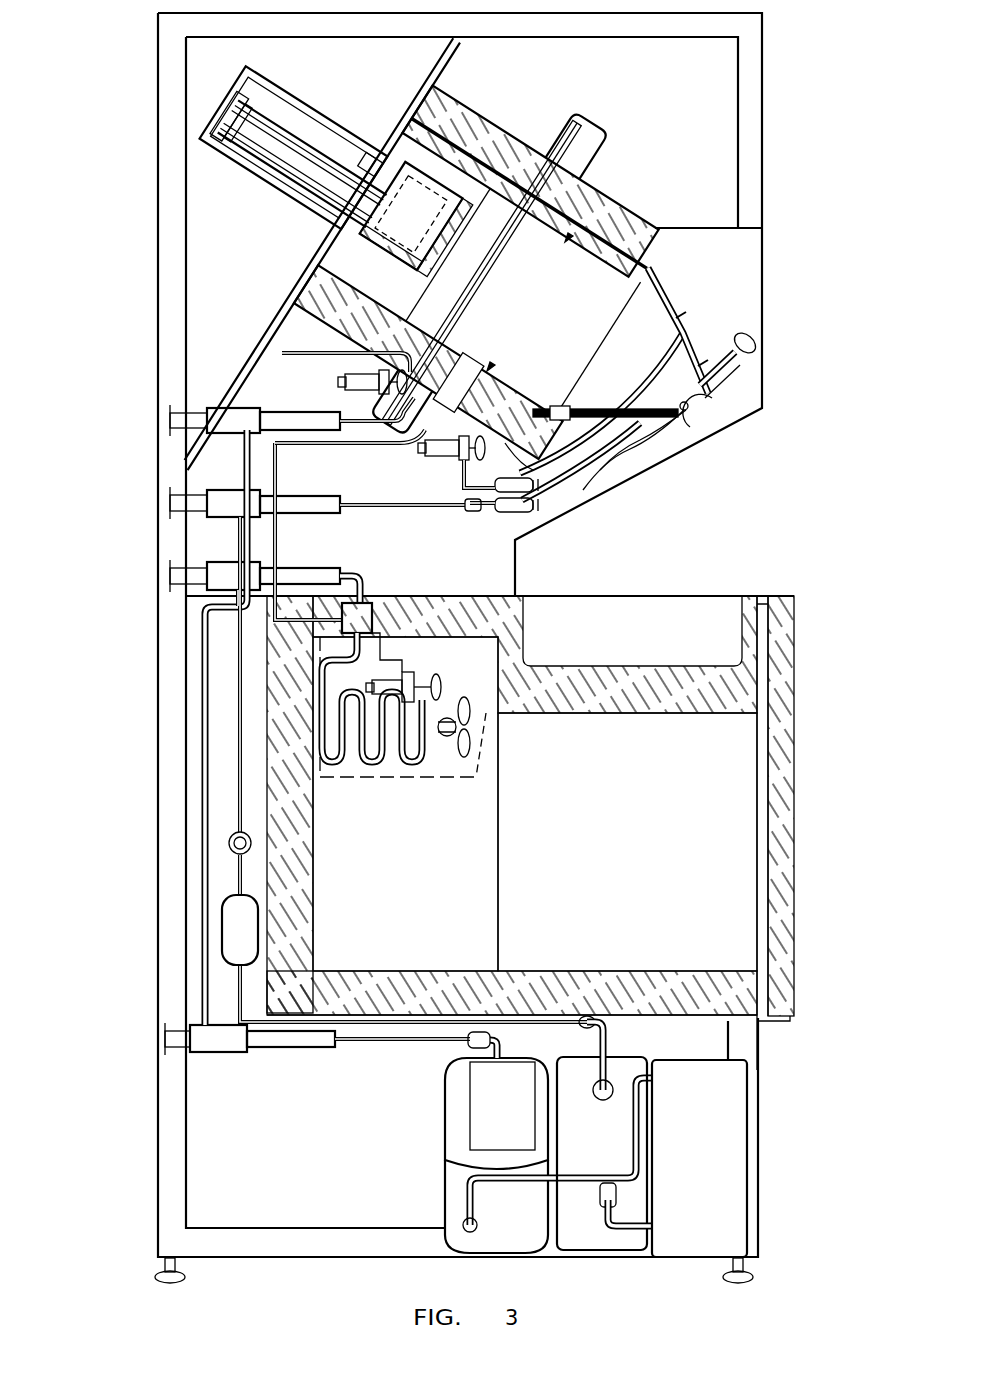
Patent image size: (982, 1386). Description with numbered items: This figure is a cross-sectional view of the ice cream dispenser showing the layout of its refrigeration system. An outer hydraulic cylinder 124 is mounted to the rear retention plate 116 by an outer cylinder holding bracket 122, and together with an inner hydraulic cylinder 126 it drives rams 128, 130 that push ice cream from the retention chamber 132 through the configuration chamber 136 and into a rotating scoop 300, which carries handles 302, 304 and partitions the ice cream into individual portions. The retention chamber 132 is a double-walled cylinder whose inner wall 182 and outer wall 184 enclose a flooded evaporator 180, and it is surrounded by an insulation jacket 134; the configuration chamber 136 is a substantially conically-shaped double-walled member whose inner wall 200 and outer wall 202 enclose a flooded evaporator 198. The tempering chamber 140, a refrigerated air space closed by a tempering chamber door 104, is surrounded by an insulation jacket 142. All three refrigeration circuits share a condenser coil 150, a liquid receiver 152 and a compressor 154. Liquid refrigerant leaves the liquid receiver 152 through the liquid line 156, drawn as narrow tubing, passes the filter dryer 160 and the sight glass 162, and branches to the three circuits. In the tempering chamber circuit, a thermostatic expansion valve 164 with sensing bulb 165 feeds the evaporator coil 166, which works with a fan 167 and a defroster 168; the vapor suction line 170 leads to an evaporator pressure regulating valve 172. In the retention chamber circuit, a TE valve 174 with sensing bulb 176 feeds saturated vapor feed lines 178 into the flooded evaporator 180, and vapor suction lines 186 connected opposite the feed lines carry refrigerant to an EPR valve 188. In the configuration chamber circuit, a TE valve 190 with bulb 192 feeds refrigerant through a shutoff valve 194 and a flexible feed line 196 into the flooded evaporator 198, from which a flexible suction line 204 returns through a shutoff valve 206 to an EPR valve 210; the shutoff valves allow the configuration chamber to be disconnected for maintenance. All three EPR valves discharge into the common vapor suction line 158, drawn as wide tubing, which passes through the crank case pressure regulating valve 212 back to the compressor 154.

The tempering chamber door 104 is at (795, 778).
The rear retention plate 116 is at (452, 63).
The outer cylinder holding bracket 122 is at (245, 80).
The outer hydraulic cylinder 124 is at (263, 133).
The inner hydraulic cylinder 126 is at (383, 163).
The ram 128 is at (505, 232).
The ram 130 is at (474, 278).
The retention chamber 132 is at (575, 321).
The insulation jacket 134 is at (325, 290).
The configuration chamber 136 is at (652, 371).
The tempering chamber 140 is at (572, 879).
The insulation jacket 142 is at (602, 692).
The condenser coil 150 is at (715, 1139).
The liquid receiver 152 is at (607, 1142).
The compressor 154 is at (525, 1212).
The liquid line 156 is at (277, 475).
The common vapor suction line 158 is at (200, 696).
The filter dryer 160 is at (222, 936).
The sight glass 162 is at (228, 845).
The thermostatic expansion valve 164 is at (415, 685).
The sensing bulb 165 is at (330, 760).
The evaporator coil 166 is at (408, 765).
The fan 167 is at (480, 755).
The defroster 168 is at (378, 610).
The tempering chamber vapor suction line 170 is at (362, 603).
The evaporator pressure regulating valve 172 is at (170, 575).
The retention chamber TE valve 174 is at (283, 385).
The sensing bulb 176 is at (342, 415).
The retention chamber saturated vapor feed lines 178 is at (490, 395).
The retention chamber evaporator 180 is at (571, 240).
The inner wall 182 is at (597, 247).
The outer wall 184 is at (652, 222).
The retention chamber vapor suction lines 186 is at (607, 213).
The retention chamber EPR valve 188 is at (170, 421).
The configuration chamber TE valve 190 is at (430, 452).
The TE valve bulb 192 is at (465, 502).
The shutoff valve 194 is at (548, 505).
The configuration chamber flexible feed line 196 is at (592, 488).
The configuration chamber flooded evaporator 198 is at (755, 340).
The inner wall 200 is at (680, 340).
The outer wall 202 is at (662, 300).
The configuration chamber flexible suction line 204 is at (648, 466).
The shutoff valve 206 is at (520, 510).
The configuration chamber EPR valve 210 is at (170, 503).
The crank case pressure regulating valve 212 is at (165, 1037).
The rotating scoop 300 is at (712, 410).
The handle 302 is at (770, 350).
The handle 304 is at (740, 378).